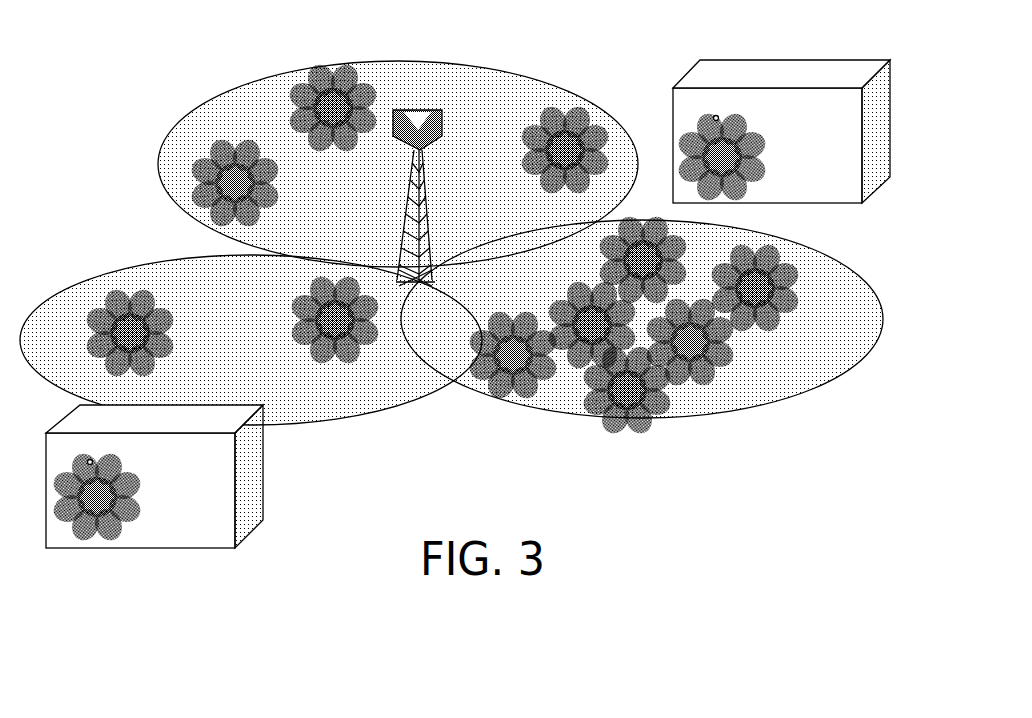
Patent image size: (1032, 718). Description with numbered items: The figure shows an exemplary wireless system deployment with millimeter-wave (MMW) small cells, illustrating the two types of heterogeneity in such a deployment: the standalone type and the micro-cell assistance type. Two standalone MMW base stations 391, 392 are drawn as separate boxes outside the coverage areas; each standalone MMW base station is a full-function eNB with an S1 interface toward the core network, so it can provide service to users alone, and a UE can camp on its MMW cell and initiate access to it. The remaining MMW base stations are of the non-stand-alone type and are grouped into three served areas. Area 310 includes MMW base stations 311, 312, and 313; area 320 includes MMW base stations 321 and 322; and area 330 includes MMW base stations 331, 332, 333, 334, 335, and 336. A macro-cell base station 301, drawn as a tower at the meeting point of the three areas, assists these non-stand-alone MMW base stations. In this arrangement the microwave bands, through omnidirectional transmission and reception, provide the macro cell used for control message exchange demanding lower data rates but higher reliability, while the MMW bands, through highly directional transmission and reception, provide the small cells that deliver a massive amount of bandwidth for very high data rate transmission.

The macro-cell base station 301 is at (438, 138).
The area 310 is at (183, 118).
The MMW base station 311 is at (252, 143).
The MMW base station 312 is at (338, 65).
The MMW base station 313 is at (558, 116).
The area 320 is at (86, 282).
The MMW base station 321 is at (138, 300).
The MMW base station 322 is at (328, 311).
The area 330 is at (882, 295).
The MMW base station 331 is at (758, 249).
The MMW base station 332 is at (692, 310).
The MMW base station 333 is at (618, 362).
The MMW base station 334 is at (642, 222).
The MMW base station 335 is at (588, 284).
The MMW base station 336 is at (510, 316).
The standalone MMW base station 391 is at (766, 88).
The standalone MMW base station 392 is at (266, 455).